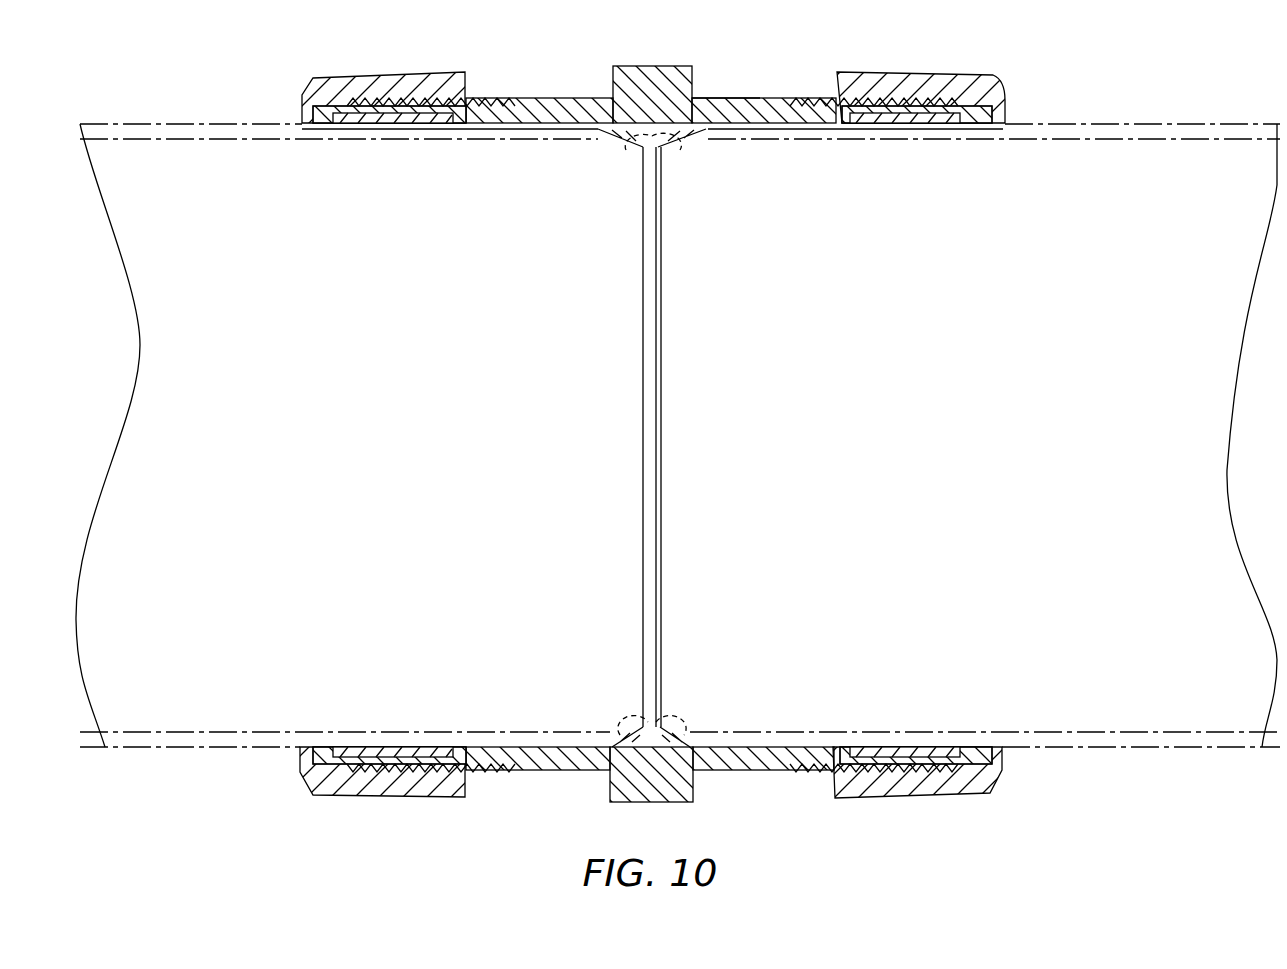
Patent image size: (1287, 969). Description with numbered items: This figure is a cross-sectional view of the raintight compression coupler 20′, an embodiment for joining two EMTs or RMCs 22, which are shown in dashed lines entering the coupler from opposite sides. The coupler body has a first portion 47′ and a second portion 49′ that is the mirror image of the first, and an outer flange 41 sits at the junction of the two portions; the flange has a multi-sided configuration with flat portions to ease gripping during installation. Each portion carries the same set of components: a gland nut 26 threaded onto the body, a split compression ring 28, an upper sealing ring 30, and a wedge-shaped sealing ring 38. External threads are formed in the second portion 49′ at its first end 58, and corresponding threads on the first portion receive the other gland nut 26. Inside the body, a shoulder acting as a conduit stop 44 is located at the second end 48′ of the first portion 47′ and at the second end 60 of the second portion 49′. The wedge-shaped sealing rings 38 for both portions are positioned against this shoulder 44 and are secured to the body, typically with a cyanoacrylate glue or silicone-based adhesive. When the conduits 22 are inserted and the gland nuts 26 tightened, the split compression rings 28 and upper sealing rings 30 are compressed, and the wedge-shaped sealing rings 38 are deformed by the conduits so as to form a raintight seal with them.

The raintight compression coupler 20′ is at (767, 84).
The EMT or RMC 22 is at (235, 124).
The gland nut 26 is at (382, 72).
The split compression ring 28 is at (360, 748).
The upper sealing ring 30 is at (425, 748).
The wedge-shaped sealing ring 38 is at (612, 742).
The outer flange 41 is at (660, 66).
The shoulder (conduit stop) 44 is at (663, 470).
The first portion 47′ is at (514, 86).
The second end of first portion 48′ is at (643, 180).
The second portion 49′ is at (808, 85).
The first end of second portion 58 is at (893, 120).
The second end of second portion 60 is at (665, 160).